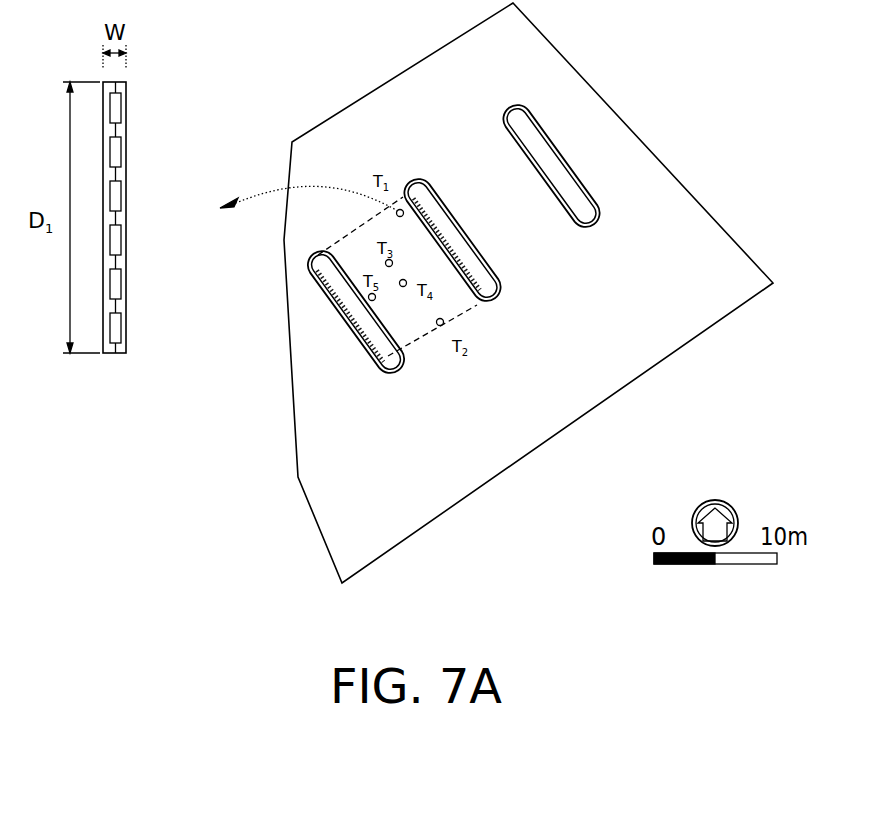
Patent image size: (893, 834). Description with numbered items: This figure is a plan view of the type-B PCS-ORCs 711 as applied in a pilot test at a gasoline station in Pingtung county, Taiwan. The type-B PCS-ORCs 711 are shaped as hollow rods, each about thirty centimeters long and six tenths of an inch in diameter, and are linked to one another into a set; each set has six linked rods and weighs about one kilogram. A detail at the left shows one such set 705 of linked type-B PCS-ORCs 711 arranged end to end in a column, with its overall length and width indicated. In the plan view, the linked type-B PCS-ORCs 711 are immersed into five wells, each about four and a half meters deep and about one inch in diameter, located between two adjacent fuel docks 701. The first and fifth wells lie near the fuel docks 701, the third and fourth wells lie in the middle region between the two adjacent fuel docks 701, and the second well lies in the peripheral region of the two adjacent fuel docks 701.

The fuel dock 701 is at (592, 222).
The sensor strip 705 is at (126, 344).
The type-B PCS-ORC 711 is at (126, 153).